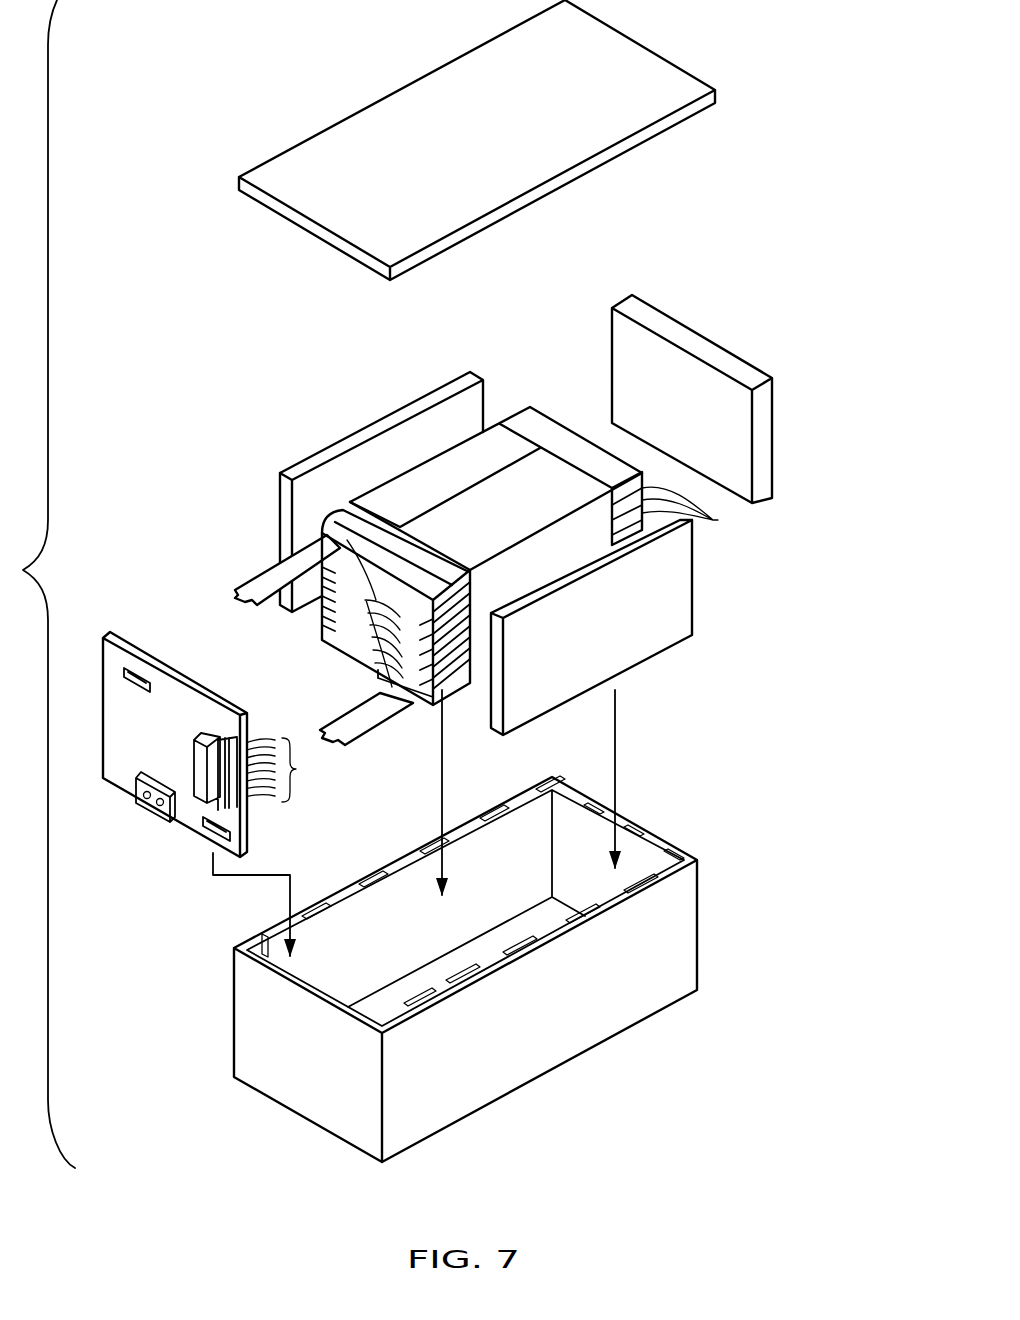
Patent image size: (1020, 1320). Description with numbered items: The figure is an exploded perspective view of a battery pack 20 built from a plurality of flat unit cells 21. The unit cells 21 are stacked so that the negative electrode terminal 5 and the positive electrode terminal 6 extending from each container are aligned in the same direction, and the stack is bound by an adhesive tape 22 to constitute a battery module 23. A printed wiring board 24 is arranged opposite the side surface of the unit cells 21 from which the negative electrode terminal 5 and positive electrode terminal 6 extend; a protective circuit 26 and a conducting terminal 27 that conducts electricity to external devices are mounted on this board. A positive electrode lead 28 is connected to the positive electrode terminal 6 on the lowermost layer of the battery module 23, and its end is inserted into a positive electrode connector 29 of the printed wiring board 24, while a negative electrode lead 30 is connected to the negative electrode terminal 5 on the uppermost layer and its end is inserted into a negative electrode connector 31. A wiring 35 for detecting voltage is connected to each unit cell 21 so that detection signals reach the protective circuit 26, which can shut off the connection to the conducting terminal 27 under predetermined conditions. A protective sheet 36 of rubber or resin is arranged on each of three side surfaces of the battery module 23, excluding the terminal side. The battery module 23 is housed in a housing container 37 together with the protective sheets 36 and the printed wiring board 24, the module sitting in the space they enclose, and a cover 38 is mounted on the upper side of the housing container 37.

The battery pack 20 is at (163, 296).
The cover 38 is at (657, 75).
The protective sheet 36 is at (347, 447).
The negative electrode lead 30 is at (252, 580).
The battery module 23 is at (425, 464).
The adhesive tape 22 is at (555, 490).
The positive electrode terminal 6 is at (407, 600).
The negative electrode terminal 5 is at (333, 535).
The wiring for detecting voltage 35 is at (347, 637).
The positive electrode lead 28 is at (363, 727).
The unit cell 21 is at (697, 513).
The printed wiring board 24 is at (138, 640).
The negative electrode connector 31 is at (138, 677).
The positive electrode connector 29 is at (228, 833).
The protective circuit 26 is at (208, 733).
The conducting terminal 27 is at (160, 820).
The housing container 37 is at (687, 933).